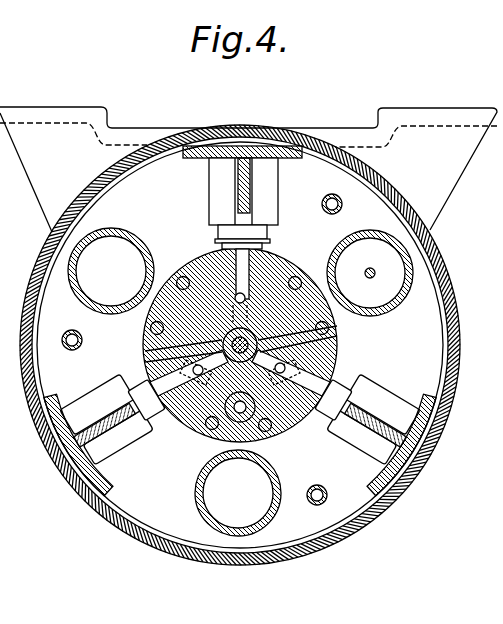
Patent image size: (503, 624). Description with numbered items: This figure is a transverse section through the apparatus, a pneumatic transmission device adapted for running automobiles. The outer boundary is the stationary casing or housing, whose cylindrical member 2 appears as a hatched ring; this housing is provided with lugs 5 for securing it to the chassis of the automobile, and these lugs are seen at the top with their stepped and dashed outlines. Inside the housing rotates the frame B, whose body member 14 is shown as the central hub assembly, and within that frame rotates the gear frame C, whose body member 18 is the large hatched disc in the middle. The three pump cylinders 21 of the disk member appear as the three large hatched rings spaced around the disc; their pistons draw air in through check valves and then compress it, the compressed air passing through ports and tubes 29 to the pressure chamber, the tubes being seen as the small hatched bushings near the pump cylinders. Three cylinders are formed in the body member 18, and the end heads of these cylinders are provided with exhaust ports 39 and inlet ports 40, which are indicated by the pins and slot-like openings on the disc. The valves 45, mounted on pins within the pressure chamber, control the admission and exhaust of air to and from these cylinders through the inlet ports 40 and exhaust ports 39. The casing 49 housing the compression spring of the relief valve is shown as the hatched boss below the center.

The cylindrical member 2 is at (259, 131).
The lugs 5 is at (48, 109).
The body member 14 is at (204, 154).
The body member 18 is at (200, 264).
The pump cylinders 21 is at (98, 309).
The tubes 29 is at (332, 200).
The exhaust ports 39 is at (244, 276).
The inlet ports 40 is at (282, 295).
The valves 45 is at (212, 348).
The casing 49 is at (234, 437).